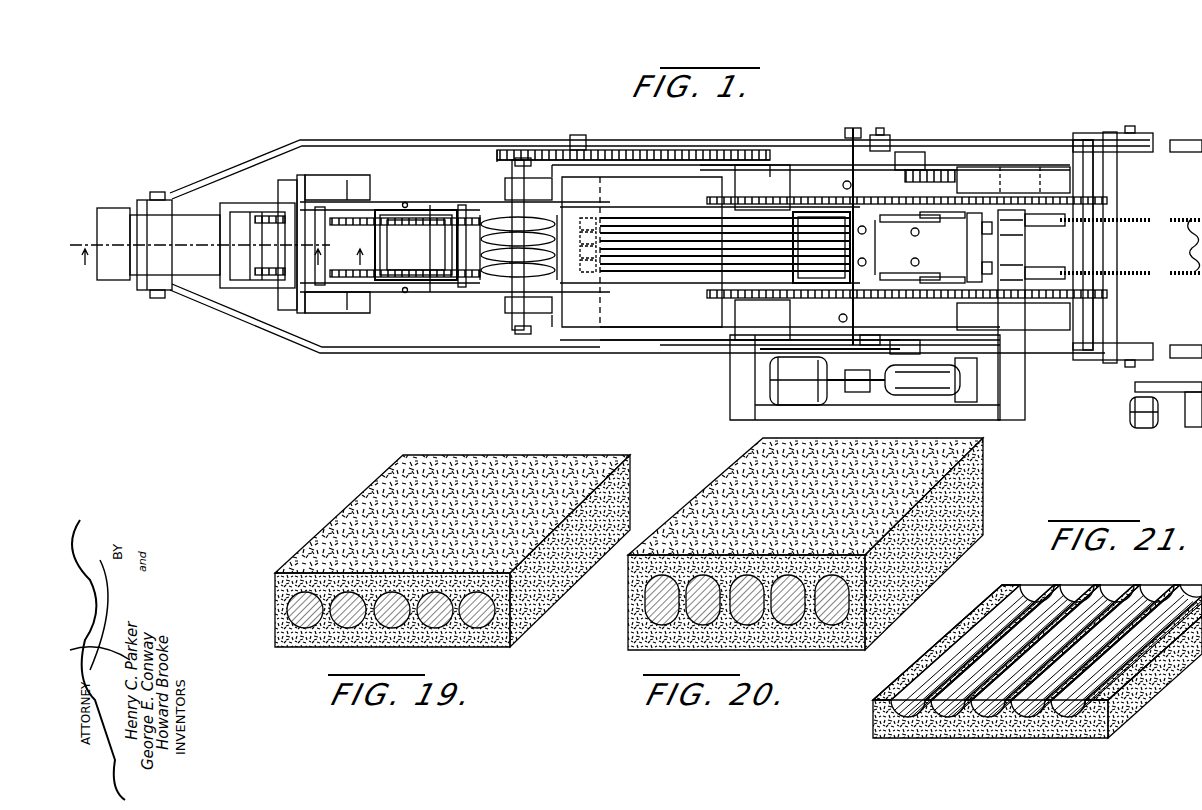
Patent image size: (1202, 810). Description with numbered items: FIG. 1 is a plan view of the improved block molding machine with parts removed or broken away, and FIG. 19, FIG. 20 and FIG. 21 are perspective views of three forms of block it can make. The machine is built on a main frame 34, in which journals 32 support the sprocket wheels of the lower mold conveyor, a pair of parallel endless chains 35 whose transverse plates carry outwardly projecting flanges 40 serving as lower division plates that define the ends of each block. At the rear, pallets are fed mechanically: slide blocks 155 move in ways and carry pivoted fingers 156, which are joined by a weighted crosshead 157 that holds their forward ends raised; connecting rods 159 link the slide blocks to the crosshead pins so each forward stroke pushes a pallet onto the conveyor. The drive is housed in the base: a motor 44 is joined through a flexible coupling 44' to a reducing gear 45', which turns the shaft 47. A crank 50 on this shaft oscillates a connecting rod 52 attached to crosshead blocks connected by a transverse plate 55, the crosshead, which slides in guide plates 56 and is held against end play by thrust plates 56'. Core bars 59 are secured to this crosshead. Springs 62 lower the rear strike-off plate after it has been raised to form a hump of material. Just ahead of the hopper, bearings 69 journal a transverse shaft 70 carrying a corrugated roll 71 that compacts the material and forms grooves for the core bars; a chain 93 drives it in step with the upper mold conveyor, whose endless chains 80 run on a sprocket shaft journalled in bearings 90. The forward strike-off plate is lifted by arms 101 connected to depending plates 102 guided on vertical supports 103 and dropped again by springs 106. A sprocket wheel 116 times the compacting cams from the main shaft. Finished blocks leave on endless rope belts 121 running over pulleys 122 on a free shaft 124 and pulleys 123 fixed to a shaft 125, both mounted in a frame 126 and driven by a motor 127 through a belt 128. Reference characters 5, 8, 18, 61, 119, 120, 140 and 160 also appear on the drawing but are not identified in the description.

The section line 5- 5 is at (202, 249).
The section line 8- 8 is at (355, 247).
The end plate 18 is at (465, 246).
The journal 32 is at (282, 305).
The main frame 34 is at (321, 313).
The endless chain 35 is at (422, 238).
The longitudinal flange 40 is at (255, 250).
The motor 44 is at (758, 381).
The flexible coupling 44' is at (856, 396).
The reducing gear 45' is at (926, 390).
The shaft 47 is at (940, 355).
The crank 50 is at (940, 160).
The connecting rod 52 is at (716, 150).
The transverse plate 55 is at (583, 303).
The guide plate 56 is at (661, 246).
The thrust plate 56' is at (800, 345).
The core bar 59 is at (692, 218).
The tie rod 61 is at (435, 294).
The spring 62 is at (407, 294).
The bearing 69 is at (516, 313).
The transverse shaft 70 is at (905, 350).
The roll 71 is at (500, 283).
The endless chain 80 is at (822, 200).
The bearing 90 is at (760, 178).
The chain 93 is at (644, 150).
The arm 101 is at (844, 236).
The depending plate 102 is at (830, 357).
The vertical support 103 is at (874, 135).
The spring 106 is at (830, 320).
The sprocket wheel 116 is at (1013, 240).
The clamp 119 is at (912, 234).
The clamp plate 120 is at (960, 246).
The endless rope belt 121 is at (1140, 276).
The pulley 122 is at (1138, 220).
The pulley 123 is at (1179, 246).
The shaft 124 is at (1090, 183).
The shaft 125 is at (1181, 232).
The frame 126 is at (1187, 350).
The motor 127 is at (1130, 413).
The belt 128 is at (1190, 409).
The end frame 140 is at (1038, 136).
The slide block 155 is at (160, 257).
The finger 156 is at (185, 224).
The crosshead 157 is at (118, 276).
The connecting rod 159 is at (428, 140).
The lug 160 is at (174, 192).